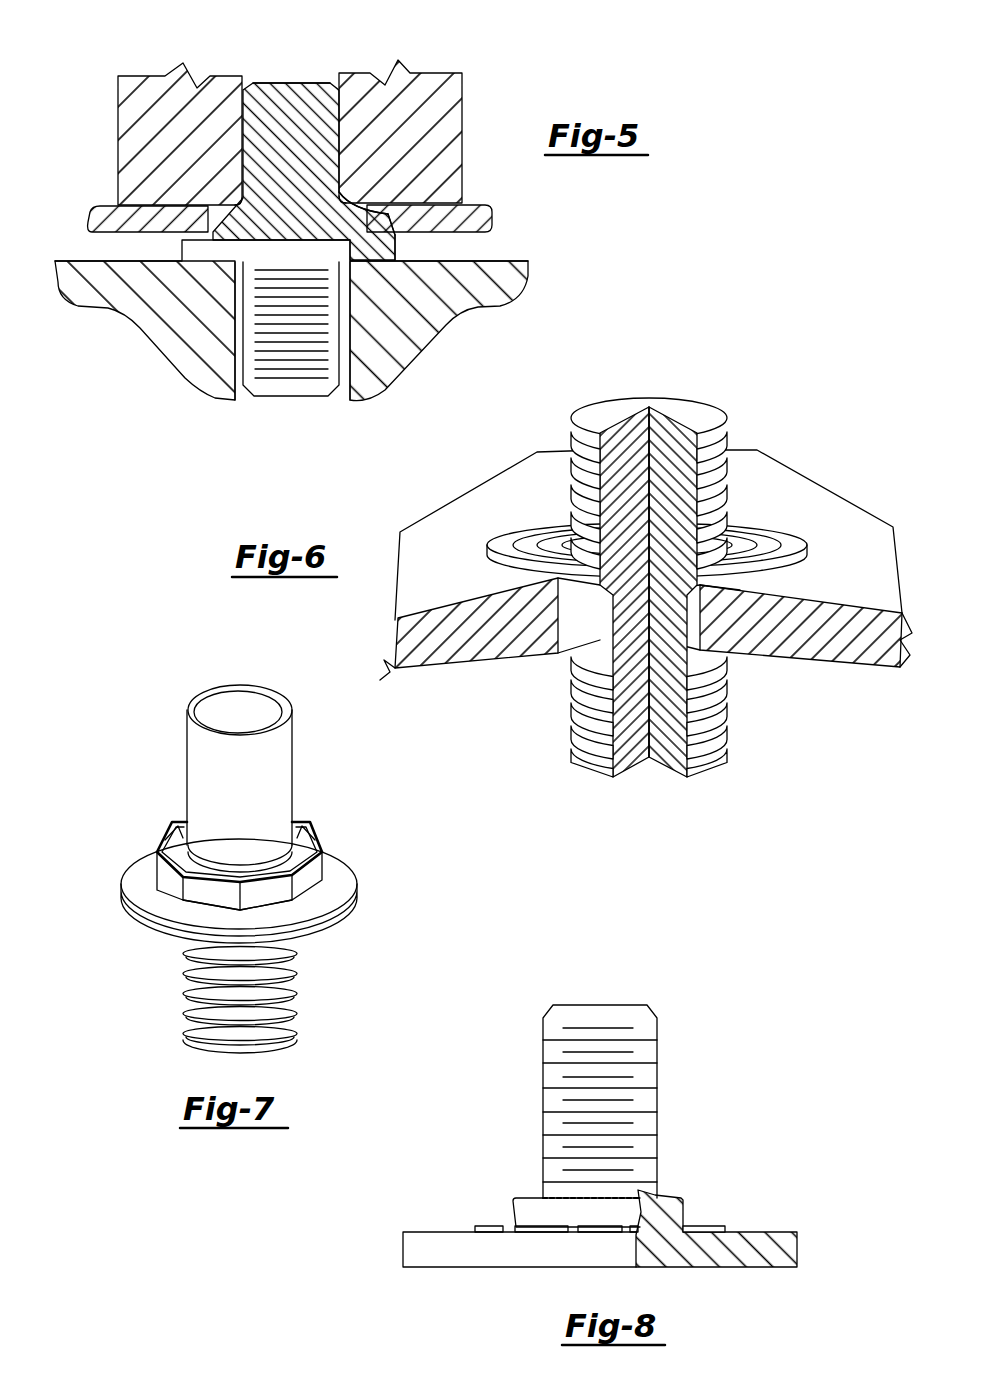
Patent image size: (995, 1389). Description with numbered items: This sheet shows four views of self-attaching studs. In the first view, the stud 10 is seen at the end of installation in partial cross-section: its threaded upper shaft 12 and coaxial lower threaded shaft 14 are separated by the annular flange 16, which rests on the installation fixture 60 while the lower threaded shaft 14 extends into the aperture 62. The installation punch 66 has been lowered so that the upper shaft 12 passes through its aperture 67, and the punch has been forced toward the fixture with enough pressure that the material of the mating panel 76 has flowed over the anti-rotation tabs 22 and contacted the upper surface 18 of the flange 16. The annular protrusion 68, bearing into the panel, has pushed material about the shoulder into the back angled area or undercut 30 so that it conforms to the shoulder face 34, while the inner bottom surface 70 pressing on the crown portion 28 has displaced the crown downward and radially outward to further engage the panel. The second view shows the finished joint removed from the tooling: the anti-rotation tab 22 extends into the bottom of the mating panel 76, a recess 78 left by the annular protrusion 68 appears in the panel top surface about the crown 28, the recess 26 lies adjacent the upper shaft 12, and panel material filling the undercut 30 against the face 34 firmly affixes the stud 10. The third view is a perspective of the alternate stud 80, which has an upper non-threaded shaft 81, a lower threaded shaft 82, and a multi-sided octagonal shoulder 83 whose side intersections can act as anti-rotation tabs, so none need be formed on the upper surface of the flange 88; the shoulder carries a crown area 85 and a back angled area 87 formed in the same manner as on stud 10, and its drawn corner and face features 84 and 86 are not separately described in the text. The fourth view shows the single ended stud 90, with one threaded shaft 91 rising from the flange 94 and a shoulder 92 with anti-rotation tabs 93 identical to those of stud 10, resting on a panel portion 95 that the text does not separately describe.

In FIG. 5, the stud 10 is at (305, 225).
In FIG. 6, the stud 10 is at (657, 542).
In FIG. 5, the threaded upper shaft 12 is at (302, 80).
In FIG. 6, the threaded upper shaft 12 is at (570, 449).
In FIG. 5, the lower threaded shaft 14 is at (309, 398).
In FIG. 6, the lower threaded shaft 14 is at (729, 769).
In FIG. 5, the annular flange 16 is at (174, 257).
In FIG. 6, the annular flange 16 is at (746, 656).
In FIG. 5, the upper surface 18 is at (272, 235).
In FIG. 5, the anti-rotation tab 22 is at (386, 219).
In FIG. 6, the anti-rotation tab 22 is at (736, 612).
In FIG. 6, the recess 26 is at (752, 538).
In FIG. 5, the crown portion 28 is at (382, 218).
In FIG. 6, the crown portion 28 is at (538, 550).
In FIG. 5, the undercut 30 is at (210, 221).
In FIG. 6, the undercut 30 is at (576, 650).
In FIG. 5, the face 34 is at (92, 229).
In FIG. 6, the face 34 is at (567, 600).
In FIG. 5, the installation fixture 60 is at (521, 258).
In FIG. 5, the aperture 62 is at (244, 412).
In FIG. 5, the installation punch 66 is at (462, 98).
In FIG. 5, the aperture 67 is at (248, 66).
In FIG. 5, the annular protrusion 68 is at (192, 228).
In FIG. 5, the inner bottom surface 70 is at (360, 196).
In FIG. 5, the mating panel 76 is at (488, 215).
In FIG. 6, the mating panel 76 is at (397, 566).
In FIG. 6, the recess 78 is at (804, 543).
In FIG. 7, the stud 80 is at (232, 861).
In FIG. 7, the upper non-threaded shaft 81 is at (186, 745).
In FIG. 7, the lower threaded shaft 82 is at (300, 1004).
In FIG. 7, the shoulder 83 is at (142, 870).
In FIG. 7, the hex nut portion 84 is at (296, 826).
In FIG. 7, the crown area 85 is at (164, 834).
In FIG. 7, the corner of nut 86 is at (315, 869).
In FIG. 7, the back angled area 87 is at (201, 903).
In FIG. 7, the flange 88 is at (334, 926).
In FIG. 8, the stud 90 is at (581, 1123).
In FIG. 8, the threaded shaft 91 is at (543, 1052).
In FIG. 8, the shoulder 92 is at (499, 1185).
In FIG. 8, the anti-rotation tabs 93 is at (493, 1224).
In FIG. 8, the flange 94 is at (402, 1249).
In FIG. 8, the sectioned plate portion 95 is at (767, 1229).